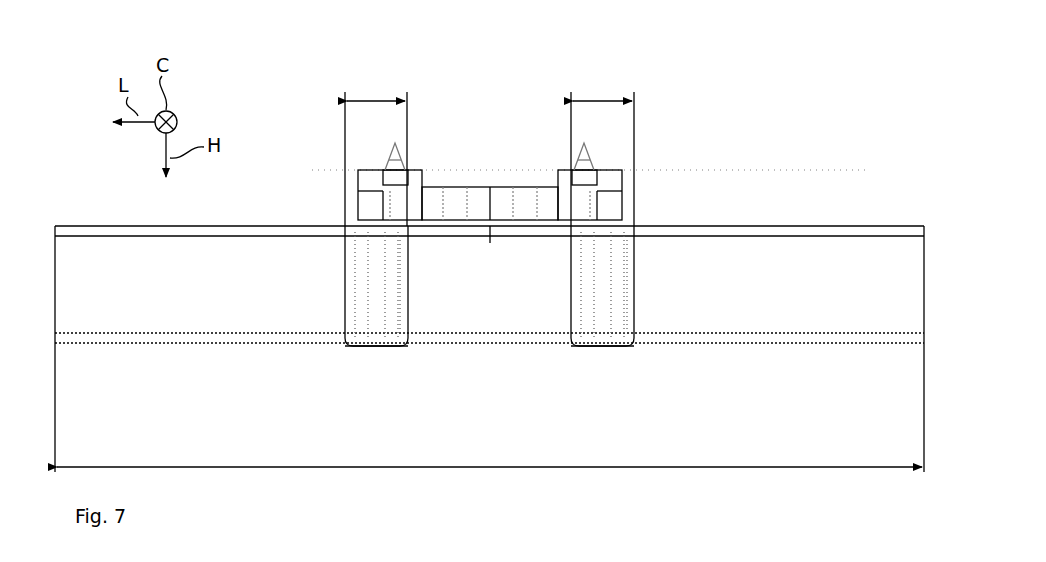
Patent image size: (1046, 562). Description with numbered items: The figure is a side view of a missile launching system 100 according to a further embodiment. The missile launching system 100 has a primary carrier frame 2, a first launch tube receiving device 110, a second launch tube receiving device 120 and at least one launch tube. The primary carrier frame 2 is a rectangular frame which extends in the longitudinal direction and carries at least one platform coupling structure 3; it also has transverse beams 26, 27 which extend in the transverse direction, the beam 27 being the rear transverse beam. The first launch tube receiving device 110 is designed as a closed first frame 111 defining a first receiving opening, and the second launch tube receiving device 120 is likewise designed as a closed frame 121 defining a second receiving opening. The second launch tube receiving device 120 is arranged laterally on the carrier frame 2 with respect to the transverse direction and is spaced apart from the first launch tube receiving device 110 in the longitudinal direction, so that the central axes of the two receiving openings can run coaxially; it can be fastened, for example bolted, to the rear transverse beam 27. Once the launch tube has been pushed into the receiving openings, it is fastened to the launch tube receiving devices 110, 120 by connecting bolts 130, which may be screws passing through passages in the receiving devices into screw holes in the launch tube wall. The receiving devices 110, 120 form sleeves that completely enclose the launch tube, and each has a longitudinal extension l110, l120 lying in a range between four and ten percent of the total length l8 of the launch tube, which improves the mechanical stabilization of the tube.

The missile launching system 100 is at (776, 102).
The first launch tube receiving device 110 is at (344, 297).
The closed first frame 111 is at (370, 332).
The second launch tube receiving device 120 is at (634, 258).
The closed frame 121 is at (596, 332).
The connecting bolts 130 is at (400, 272).
The transverse beam 26 is at (358, 213).
The rear transverse beam 27 is at (622, 213).
The primary carrier frame 2 is at (503, 186).
The platform coupling structure 3 is at (588, 154).
The longitudinal extension l110 is at (372, 98).
The longitudinal extension l120 is at (606, 98).
The total length l8 is at (490, 467).